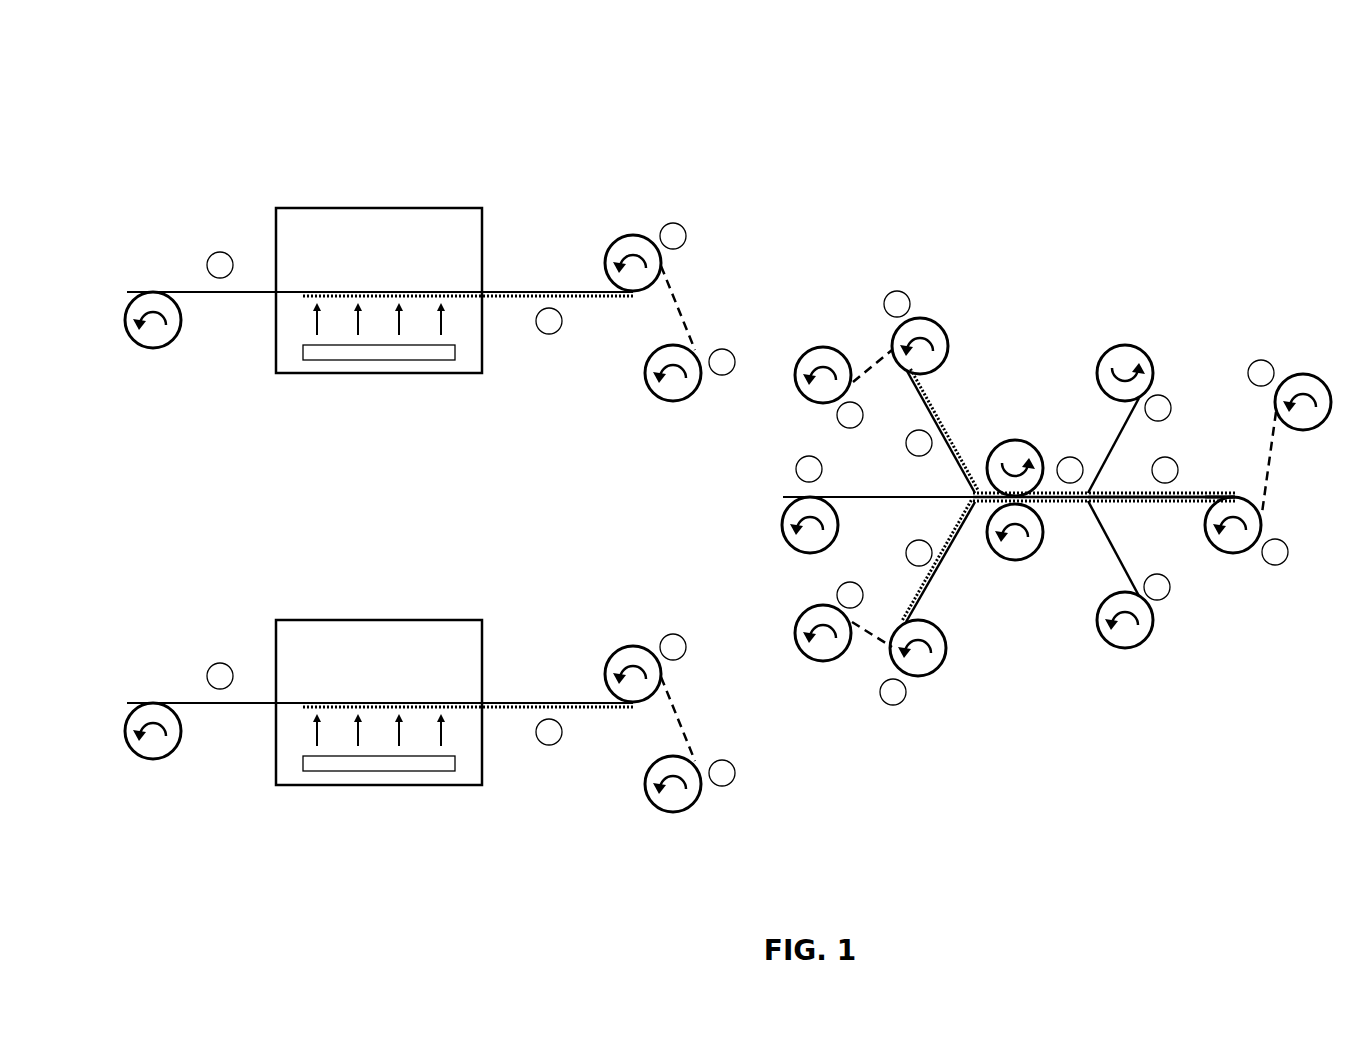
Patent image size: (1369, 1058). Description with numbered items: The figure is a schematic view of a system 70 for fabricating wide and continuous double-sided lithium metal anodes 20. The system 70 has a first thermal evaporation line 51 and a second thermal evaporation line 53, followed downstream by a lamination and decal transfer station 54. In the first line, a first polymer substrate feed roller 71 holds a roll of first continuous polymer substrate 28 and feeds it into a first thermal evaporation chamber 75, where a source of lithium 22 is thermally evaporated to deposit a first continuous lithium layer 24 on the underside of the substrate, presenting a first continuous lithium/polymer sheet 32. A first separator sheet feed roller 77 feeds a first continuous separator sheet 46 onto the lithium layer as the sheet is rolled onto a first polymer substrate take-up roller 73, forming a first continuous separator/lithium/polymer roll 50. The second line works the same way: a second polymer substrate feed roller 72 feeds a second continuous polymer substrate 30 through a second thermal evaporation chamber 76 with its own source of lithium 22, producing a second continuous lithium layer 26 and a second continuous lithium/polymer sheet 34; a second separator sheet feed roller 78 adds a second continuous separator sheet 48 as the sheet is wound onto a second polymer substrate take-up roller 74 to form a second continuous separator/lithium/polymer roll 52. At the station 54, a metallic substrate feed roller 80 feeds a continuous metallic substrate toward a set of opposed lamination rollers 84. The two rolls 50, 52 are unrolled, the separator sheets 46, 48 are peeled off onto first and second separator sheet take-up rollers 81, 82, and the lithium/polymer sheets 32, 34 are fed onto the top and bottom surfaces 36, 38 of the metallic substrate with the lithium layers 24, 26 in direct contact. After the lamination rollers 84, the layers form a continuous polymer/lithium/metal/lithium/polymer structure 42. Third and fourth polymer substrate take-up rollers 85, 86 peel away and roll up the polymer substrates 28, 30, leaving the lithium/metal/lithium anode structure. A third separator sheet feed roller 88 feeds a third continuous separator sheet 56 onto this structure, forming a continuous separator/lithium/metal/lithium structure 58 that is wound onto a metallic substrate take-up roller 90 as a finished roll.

The system 70 is at (324, 81).
The first thermal evaporation line 51 is at (269, 169).
The second thermal evaporation line 53 is at (269, 580).
The lamination and decal transfer station 54 is at (1343, 197).
The first polymer substrate feed roller 71 is at (153, 349).
The second polymer substrate feed roller 72 is at (153, 760).
The first continuous polymer substrate 28 is at (224, 295).
The second continuous polymer substrate 30 is at (224, 706).
The first thermal evaporation chamber 75 is at (367, 246).
The second thermal evaporation chamber 76 is at (367, 657).
The source of lithium 22 is at (380, 353).
The first continuous lithium layer 24 is at (587, 298).
The second continuous lithium layer 26 is at (587, 709).
The first continuous lithium/polymer sheet 32 is at (550, 362).
The second continuous lithium/polymer sheet 34 is at (550, 773).
The first polymer substrate take-up roller 73 is at (623, 237).
The second polymer substrate take-up roller 74 is at (623, 648).
The first continuous separator/lithium/polymer roll 50 is at (655, 206).
The second continuous separator/lithium/polymer roll 52 is at (655, 617).
The first continuous separator sheet 46 is at (673, 293).
The second continuous separator sheet 48 is at (673, 704).
The first separator sheet feed roller 77 is at (673, 402).
The second separator sheet feed roller 78 is at (673, 813).
The first separator sheet take-up roller 81 is at (823, 347).
The second separator sheet take-up roller 82 is at (822, 662).
The metallic substrate feed roller 80 is at (782, 532).
The top surface 36 is at (890, 497).
The bottom surface 38 is at (903, 498).
The continuous polymer/lithium/metal/lithium/polymer structure 42 is at (1032, 499).
The lamination rollers 84 is at (1015, 440).
The third polymer substrate take-up roller 85 is at (1125, 345).
The fourth polymer substrate take-up roller 86 is at (1125, 649).
The third separator sheet feed roller 88 is at (1303, 374).
The metallic substrate take-up roller 90 is at (1247, 551).
The third continuous separator sheet 56 is at (1266, 462).
The double-sided lithium metal anode 20 is at (1201, 489).
The continuous separator/lithium/metal/lithium structure 58 is at (1226, 571).